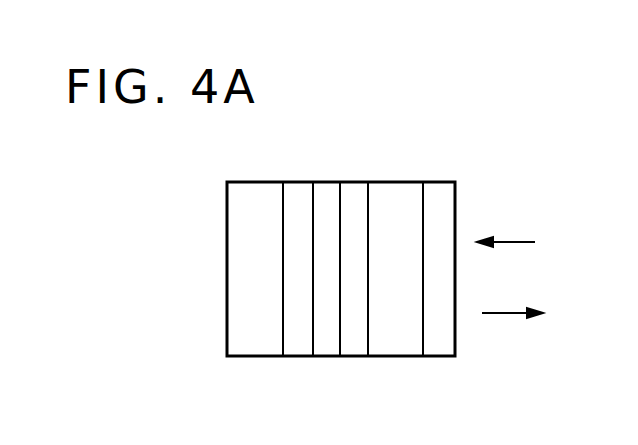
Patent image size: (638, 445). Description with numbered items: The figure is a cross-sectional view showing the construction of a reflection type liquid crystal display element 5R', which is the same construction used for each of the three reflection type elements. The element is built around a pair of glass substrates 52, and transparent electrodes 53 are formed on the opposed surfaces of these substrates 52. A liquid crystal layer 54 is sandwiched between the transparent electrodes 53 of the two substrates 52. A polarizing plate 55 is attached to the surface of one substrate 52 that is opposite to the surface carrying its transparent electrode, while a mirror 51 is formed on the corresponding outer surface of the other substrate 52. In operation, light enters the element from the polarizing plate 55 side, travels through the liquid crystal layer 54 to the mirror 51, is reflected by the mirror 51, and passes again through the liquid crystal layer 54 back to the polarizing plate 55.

The mirror 51 is at (225, 280).
The pair of glass substrates 52 is at (392, 193).
The transparent electrodes 53 is at (353, 193).
The liquid crystal layer 54 is at (324, 337).
The polarizing plate 55 is at (438, 210).
The reflection type liquid crystal display element 5R' is at (312, 399).